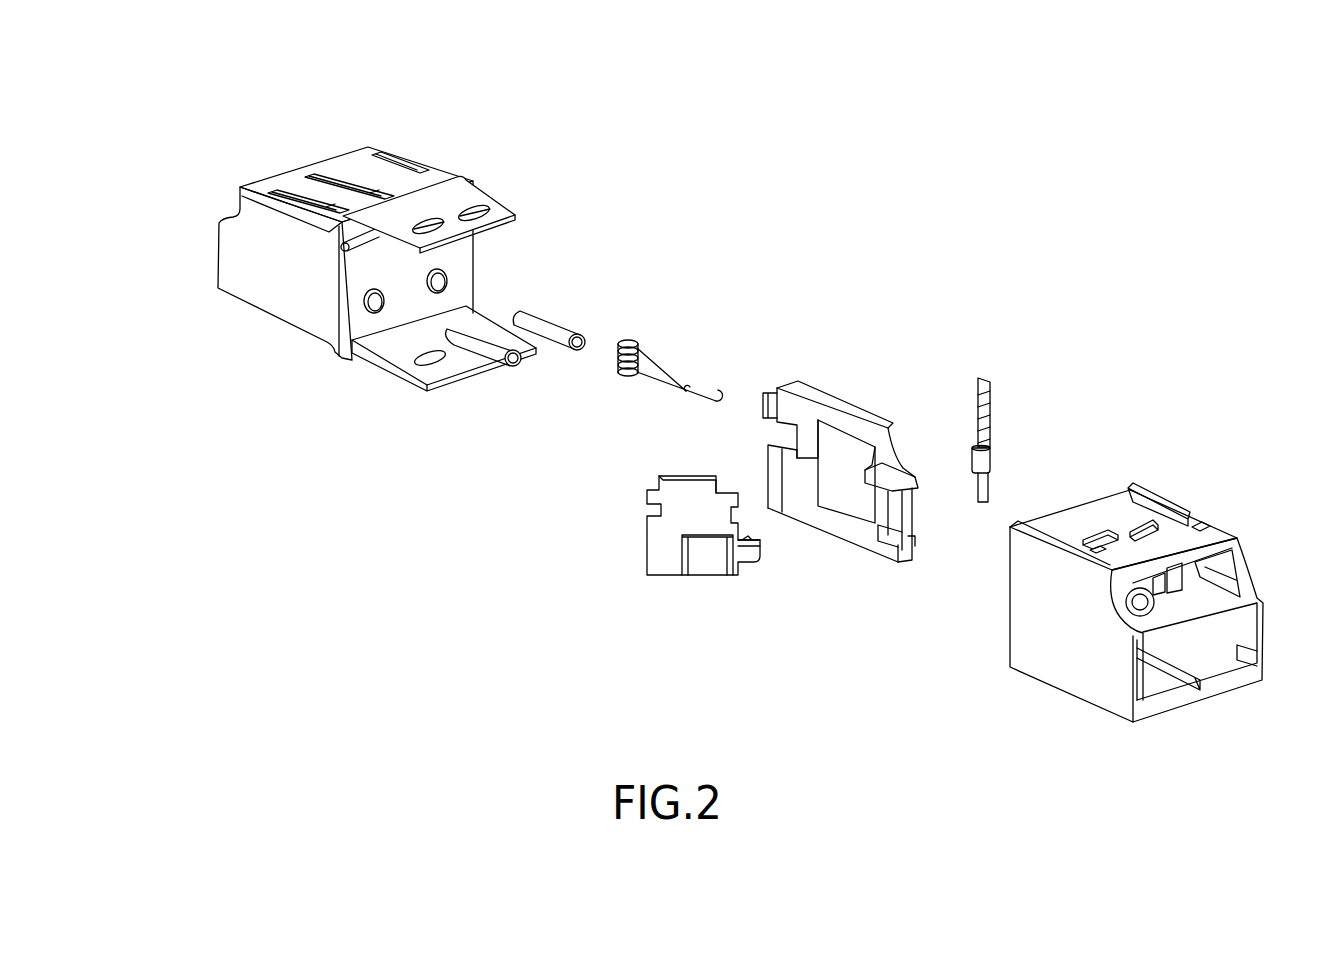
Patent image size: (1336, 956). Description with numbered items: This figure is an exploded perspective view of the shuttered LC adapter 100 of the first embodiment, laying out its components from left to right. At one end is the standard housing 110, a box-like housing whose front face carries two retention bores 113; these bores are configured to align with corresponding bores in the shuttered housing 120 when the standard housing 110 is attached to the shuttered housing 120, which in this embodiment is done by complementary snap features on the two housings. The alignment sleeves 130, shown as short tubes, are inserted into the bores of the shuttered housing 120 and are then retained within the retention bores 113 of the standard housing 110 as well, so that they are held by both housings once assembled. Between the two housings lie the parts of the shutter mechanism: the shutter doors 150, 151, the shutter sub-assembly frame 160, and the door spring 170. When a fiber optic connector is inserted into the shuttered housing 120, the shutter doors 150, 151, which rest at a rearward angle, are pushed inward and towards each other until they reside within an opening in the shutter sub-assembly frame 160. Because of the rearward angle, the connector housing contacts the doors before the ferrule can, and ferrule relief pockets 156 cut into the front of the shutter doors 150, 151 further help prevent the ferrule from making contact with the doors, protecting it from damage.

The shuttered LC adapter 100 is at (955, 190).
The standard housing 110 is at (273, 282).
The retention bores 113 is at (437, 292).
The shuttered housing 120 is at (1182, 520).
The alignment sleeves 130 is at (573, 342).
The shutter door 150 is at (675, 566).
The shutter door 151 is at (985, 390).
The ferrule relief pockets 156 is at (706, 560).
The shutter sub-assembly frame 160 is at (825, 405).
The door spring 170 is at (660, 362).